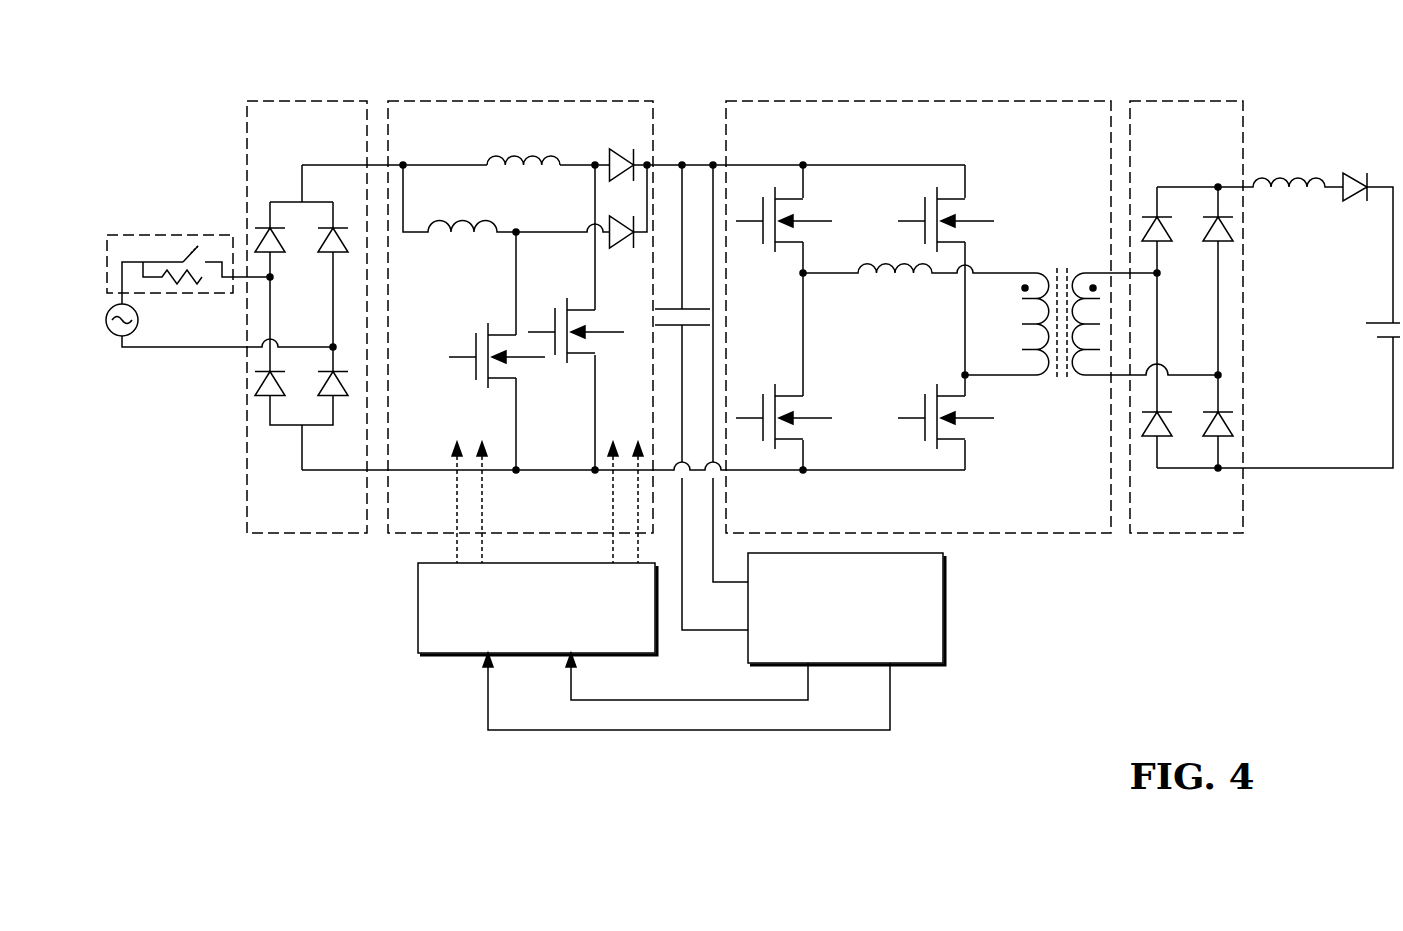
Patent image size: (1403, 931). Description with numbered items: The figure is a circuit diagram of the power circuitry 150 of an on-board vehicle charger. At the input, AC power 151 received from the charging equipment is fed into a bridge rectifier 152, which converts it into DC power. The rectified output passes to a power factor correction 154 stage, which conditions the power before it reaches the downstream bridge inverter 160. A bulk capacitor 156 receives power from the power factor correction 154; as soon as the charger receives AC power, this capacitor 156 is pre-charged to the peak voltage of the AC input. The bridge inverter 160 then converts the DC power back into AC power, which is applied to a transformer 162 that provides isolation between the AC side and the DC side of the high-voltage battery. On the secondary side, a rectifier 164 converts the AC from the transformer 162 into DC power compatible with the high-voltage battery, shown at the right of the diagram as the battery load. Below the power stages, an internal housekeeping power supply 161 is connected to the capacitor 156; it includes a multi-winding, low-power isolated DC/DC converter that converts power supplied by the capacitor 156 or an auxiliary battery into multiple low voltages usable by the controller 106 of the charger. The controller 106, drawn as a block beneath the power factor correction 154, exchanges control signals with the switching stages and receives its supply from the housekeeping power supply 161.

The power circuitry 150 is at (178, 127).
The AC power 151 is at (104, 324).
The bridge rectifier 152 is at (249, 99).
The power factor correction 154 is at (648, 99).
The bulk capacitor 156 is at (673, 305).
The bridge inverter 160 is at (1006, 99).
The transformer 162 is at (1010, 378).
The rectifier 164 is at (1233, 99).
The internal housekeeping power supply 161 is at (946, 606).
The controller 106 is at (516, 622).